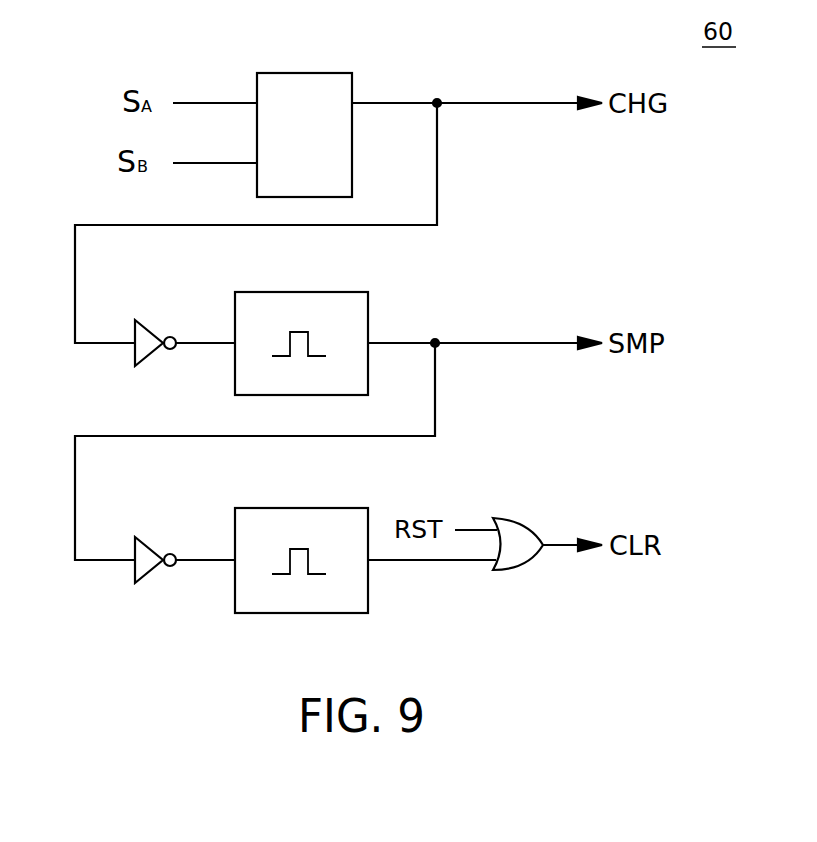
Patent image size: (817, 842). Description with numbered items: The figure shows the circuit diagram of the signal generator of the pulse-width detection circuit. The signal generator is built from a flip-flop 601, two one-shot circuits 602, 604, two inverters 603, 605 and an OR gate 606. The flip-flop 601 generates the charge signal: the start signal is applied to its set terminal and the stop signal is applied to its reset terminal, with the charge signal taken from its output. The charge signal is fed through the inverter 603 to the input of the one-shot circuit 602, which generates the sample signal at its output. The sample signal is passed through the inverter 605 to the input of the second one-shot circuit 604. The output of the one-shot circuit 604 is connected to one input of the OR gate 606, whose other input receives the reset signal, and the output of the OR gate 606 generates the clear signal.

The flip-flop 601 is at (305, 72).
The one-shot circuit 602 is at (303, 292).
The inverter 603 is at (152, 330).
The one-shot circuit 604 is at (303, 508).
The inverter 605 is at (152, 547).
The OR gate 606 is at (515, 568).